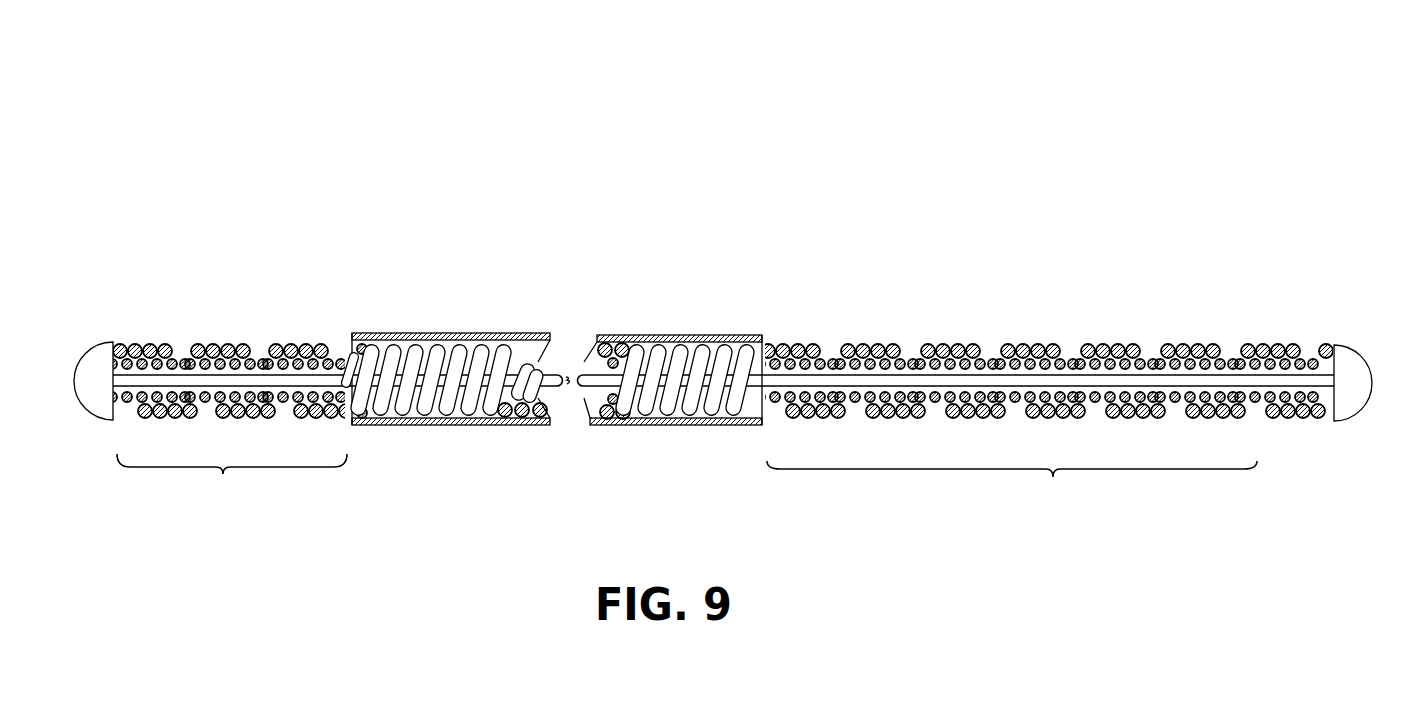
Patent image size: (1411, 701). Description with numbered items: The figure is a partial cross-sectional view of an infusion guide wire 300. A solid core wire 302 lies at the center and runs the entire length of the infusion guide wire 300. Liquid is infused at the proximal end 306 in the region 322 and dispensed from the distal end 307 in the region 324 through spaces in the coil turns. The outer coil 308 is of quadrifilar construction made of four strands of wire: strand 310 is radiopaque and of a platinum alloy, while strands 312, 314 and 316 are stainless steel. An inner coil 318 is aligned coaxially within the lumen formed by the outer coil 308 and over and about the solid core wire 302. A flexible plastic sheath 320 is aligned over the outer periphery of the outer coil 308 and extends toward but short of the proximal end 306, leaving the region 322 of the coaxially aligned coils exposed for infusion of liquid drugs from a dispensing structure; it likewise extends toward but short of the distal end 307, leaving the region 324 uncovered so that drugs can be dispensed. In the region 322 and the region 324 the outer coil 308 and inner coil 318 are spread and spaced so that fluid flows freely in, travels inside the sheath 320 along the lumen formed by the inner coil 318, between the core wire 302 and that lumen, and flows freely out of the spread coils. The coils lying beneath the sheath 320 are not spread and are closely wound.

The infusion guide wire 300 is at (1253, 80).
The solid core wire 302 is at (552, 383).
The proximal end 306 is at (90, 432).
The distal end 307 is at (1352, 442).
The outer coil 308 is at (443, 397).
The strand 310 is at (115, 344).
The strand 312 is at (135, 346).
The strand 314 is at (150, 346).
The strand 316 is at (165, 347).
The inner coil 318 is at (347, 362).
The flexible plastic sheath 320 is at (517, 420).
The region 322 is at (232, 479).
The region 324 is at (1012, 486).